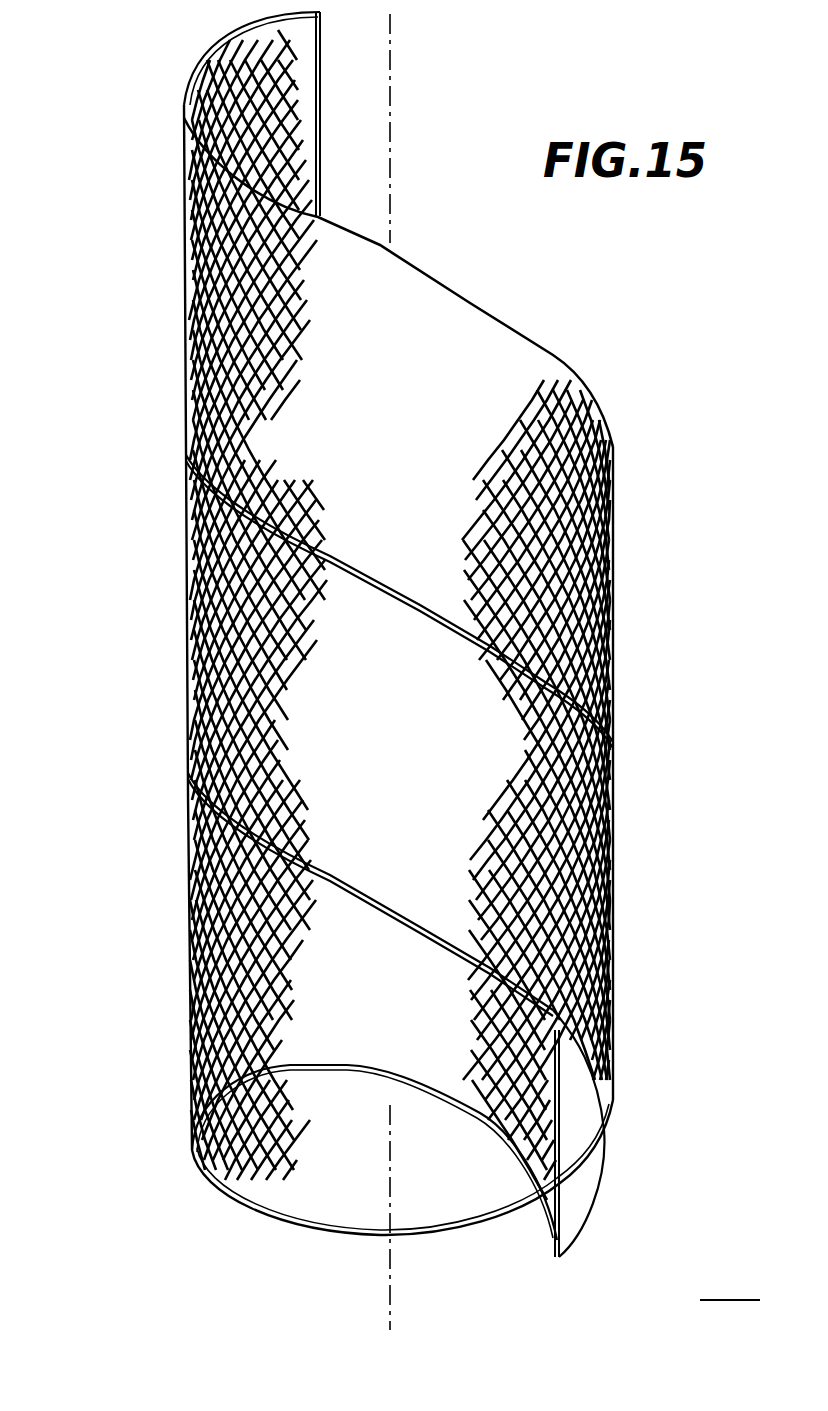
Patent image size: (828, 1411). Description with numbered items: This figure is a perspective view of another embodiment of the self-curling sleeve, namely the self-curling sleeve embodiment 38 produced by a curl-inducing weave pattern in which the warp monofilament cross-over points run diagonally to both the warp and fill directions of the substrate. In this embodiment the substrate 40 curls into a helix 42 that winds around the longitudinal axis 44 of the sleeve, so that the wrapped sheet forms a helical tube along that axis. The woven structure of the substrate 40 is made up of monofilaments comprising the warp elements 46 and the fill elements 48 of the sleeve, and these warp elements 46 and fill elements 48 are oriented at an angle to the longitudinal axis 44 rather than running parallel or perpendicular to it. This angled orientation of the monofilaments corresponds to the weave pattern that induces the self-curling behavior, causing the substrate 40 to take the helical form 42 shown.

The self-curling sleeve embodiment 38 is at (96, 399).
The substrate 40 is at (430, 296).
The helix 42 is at (403, 598).
The longitudinal axis 44 is at (390, 58).
The warp elements 46 is at (537, 410).
The fill elements 48 is at (532, 392).